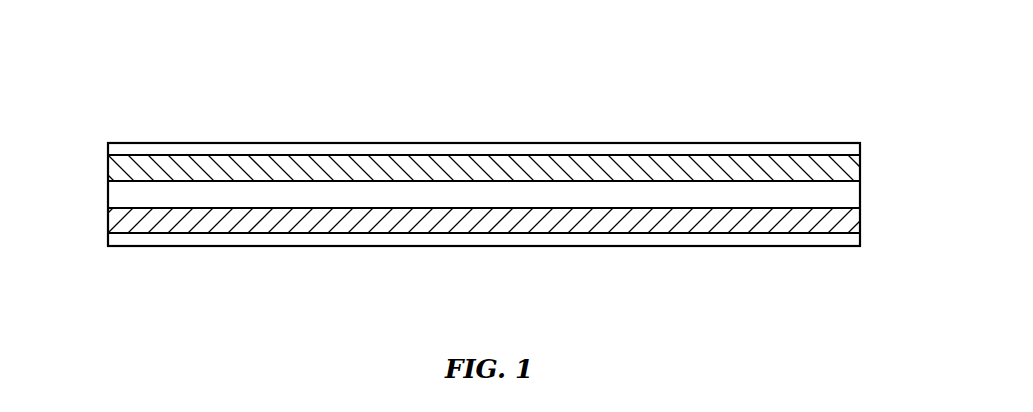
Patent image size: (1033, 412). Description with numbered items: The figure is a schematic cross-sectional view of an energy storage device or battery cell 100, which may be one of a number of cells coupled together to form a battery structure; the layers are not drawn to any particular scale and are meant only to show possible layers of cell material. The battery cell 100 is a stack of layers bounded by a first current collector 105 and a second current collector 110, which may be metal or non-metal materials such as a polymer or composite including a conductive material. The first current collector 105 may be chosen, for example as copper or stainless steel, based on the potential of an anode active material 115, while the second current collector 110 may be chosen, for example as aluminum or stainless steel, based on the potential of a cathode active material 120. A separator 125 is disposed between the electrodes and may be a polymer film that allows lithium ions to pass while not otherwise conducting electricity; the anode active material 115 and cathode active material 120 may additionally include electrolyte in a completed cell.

The battery cell 100 is at (242, 87).
The first current collector 105 is at (320, 246).
The second current collector 110 is at (710, 143).
The anode active material 115 is at (108, 210).
The cathode active material 120 is at (860, 164).
The separator 125 is at (860, 200).